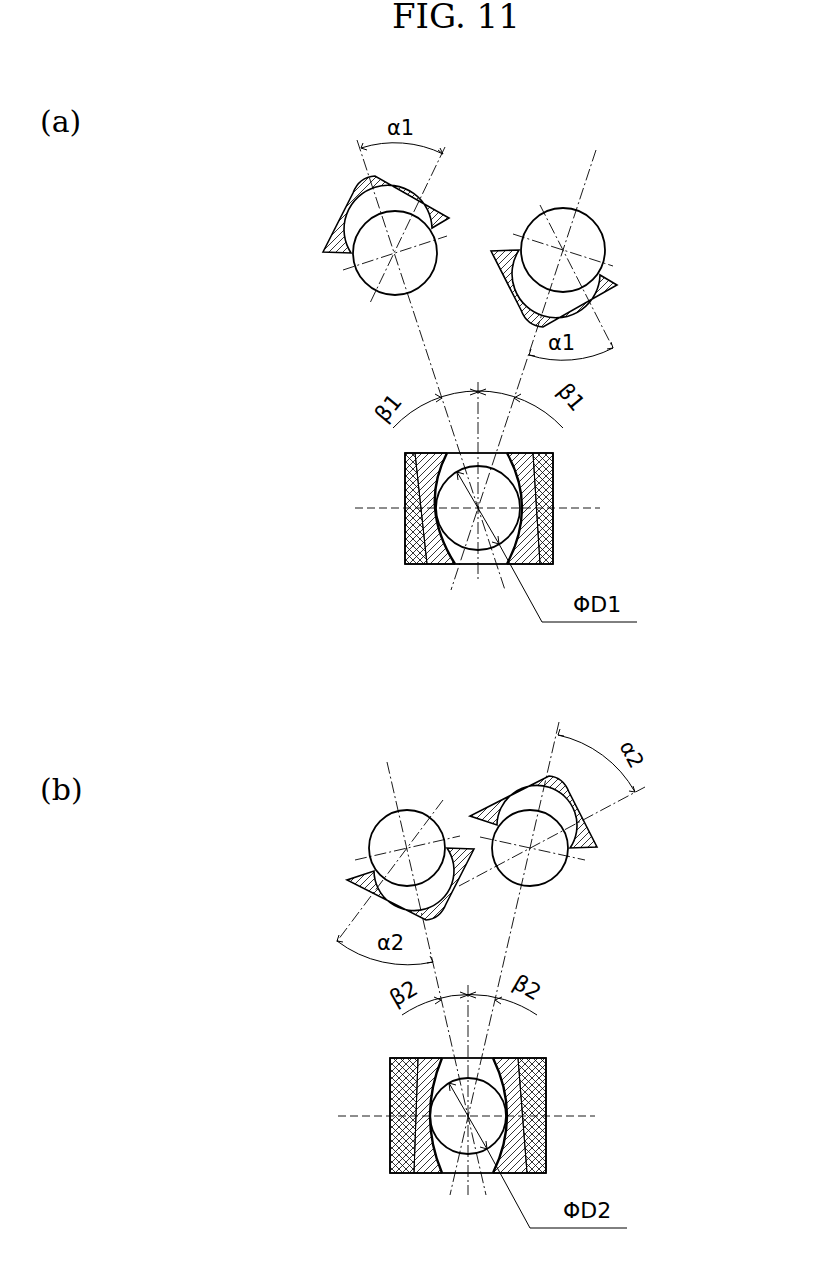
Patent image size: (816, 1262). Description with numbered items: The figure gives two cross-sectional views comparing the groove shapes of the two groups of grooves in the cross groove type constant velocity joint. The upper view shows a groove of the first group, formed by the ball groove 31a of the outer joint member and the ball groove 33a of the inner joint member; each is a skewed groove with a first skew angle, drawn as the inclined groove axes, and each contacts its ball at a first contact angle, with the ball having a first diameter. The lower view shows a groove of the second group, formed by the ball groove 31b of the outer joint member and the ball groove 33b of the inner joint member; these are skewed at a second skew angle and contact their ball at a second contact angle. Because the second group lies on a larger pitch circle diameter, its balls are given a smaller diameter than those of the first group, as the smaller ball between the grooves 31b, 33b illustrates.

The ball groove of the outer joint member 31a is at (342, 226).
The ball groove of the inner joint member 33a is at (662, 277).
The ball groove of the outer joint member 31b is at (603, 836).
The ball groove of the inner joint member 33b is at (352, 870).